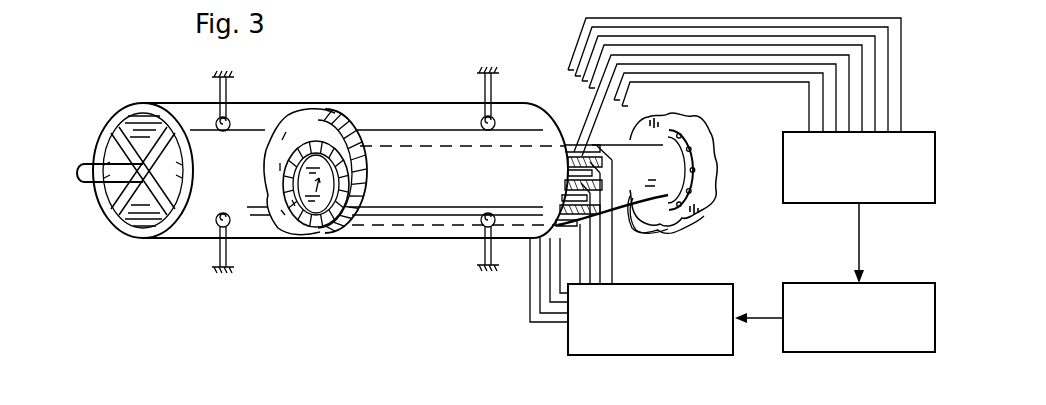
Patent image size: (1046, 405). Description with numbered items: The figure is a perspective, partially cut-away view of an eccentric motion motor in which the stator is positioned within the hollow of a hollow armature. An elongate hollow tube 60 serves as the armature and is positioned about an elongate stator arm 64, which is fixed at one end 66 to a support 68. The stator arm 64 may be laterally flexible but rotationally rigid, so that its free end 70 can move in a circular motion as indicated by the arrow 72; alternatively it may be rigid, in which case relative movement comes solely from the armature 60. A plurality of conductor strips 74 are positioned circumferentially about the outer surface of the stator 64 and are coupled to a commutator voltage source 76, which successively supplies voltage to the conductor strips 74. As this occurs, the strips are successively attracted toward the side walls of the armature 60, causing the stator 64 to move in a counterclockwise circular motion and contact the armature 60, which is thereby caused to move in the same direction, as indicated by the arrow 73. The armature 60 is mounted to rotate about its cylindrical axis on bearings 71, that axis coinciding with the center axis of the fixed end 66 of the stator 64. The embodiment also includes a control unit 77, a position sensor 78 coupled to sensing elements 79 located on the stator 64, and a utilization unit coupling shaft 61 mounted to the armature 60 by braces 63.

The elongate hollow tube 60 is at (252, 112).
The utilization unit coupling shaft 61 is at (90, 164).
The braces 63 is at (160, 207).
The elongate stator arm 64 is at (636, 187).
The fixed end 66 is at (713, 231).
The support 68 is at (713, 158).
The free end 70 is at (366, 143).
The bearings 71 is at (220, 213).
The arrow 72 is at (322, 226).
The arrow 73 is at (379, 182).
The conductor strips 74 is at (317, 214).
The commutator voltage source 76 is at (568, 345).
The control unit 77 is at (906, 283).
The position sensor 78 is at (923, 132).
The sensing elements 79 is at (331, 147).